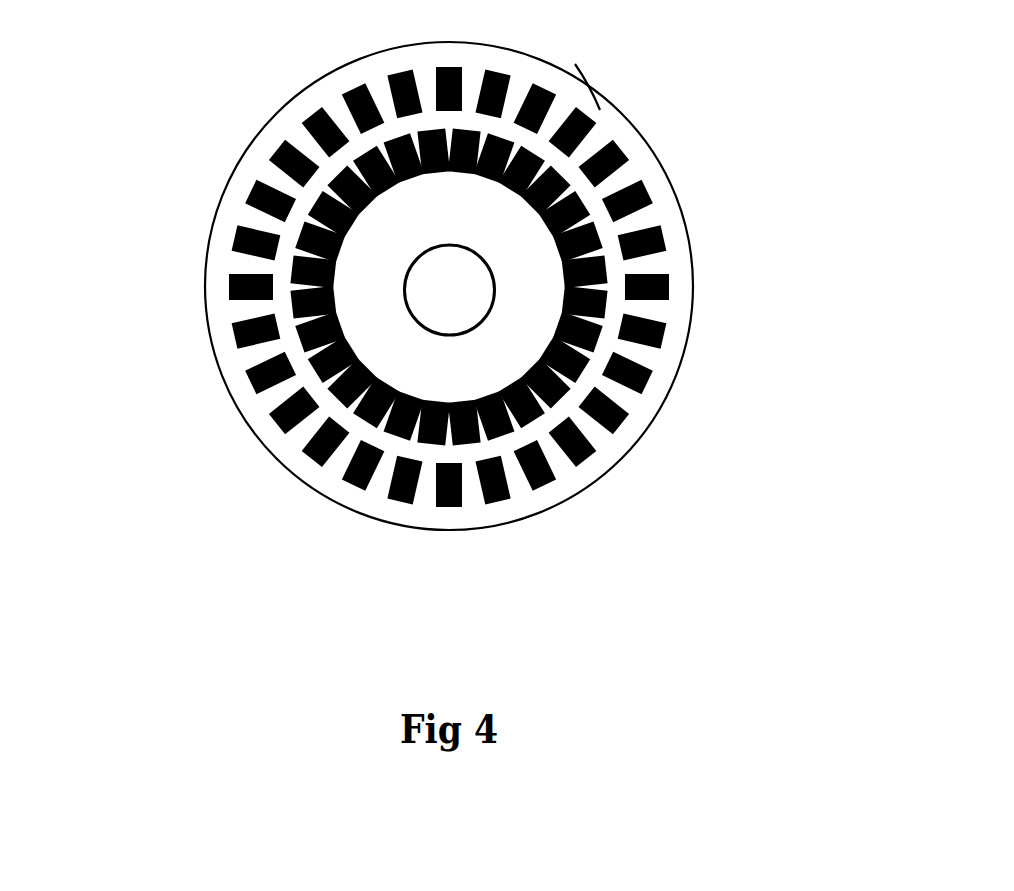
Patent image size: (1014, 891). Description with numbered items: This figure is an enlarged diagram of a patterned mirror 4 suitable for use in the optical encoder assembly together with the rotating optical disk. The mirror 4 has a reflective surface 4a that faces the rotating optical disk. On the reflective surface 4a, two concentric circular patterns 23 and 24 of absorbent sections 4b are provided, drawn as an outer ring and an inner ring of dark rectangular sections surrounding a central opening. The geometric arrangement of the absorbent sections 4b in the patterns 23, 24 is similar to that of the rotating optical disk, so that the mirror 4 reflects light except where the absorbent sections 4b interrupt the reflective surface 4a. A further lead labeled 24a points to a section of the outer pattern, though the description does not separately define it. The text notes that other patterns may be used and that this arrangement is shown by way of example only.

The mirror 4 is at (153, 405).
The reflective surface 4a is at (600, 96).
The absorbent sections 4b is at (646, 403).
The circular pattern 23 is at (673, 213).
The circular pattern 24 is at (624, 331).
The outer magnet pole 24a is at (685, 291).